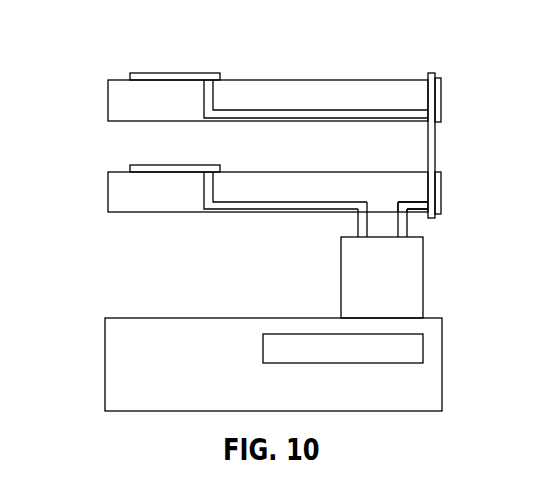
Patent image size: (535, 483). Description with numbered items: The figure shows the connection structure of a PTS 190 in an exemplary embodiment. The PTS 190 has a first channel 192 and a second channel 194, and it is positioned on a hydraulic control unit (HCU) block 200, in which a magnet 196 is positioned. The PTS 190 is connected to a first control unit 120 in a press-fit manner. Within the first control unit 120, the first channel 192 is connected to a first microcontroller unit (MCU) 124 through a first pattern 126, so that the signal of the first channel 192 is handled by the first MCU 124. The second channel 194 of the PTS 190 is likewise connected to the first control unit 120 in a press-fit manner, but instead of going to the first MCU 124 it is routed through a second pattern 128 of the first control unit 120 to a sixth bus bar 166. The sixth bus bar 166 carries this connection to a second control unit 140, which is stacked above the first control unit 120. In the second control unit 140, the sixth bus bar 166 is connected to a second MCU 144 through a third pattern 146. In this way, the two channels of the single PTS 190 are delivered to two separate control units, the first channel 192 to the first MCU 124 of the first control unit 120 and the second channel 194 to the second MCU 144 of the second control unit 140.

The first control unit 120 is at (115, 191).
The first microcontroller unit 124 is at (155, 164).
The first pattern 126 is at (240, 203).
The second pattern 128 is at (407, 205).
The second control unit 140 is at (115, 100).
The second MCU 144 is at (168, 73).
The third pattern 146 is at (323, 112).
The sixth bus bar 166 is at (435, 145).
The PTS 190 is at (413, 278).
The first channel 192 is at (358, 222).
The second channel 194 is at (407, 222).
The magnet 196 is at (413, 349).
The hydraulic control unit block 200 is at (113, 357).